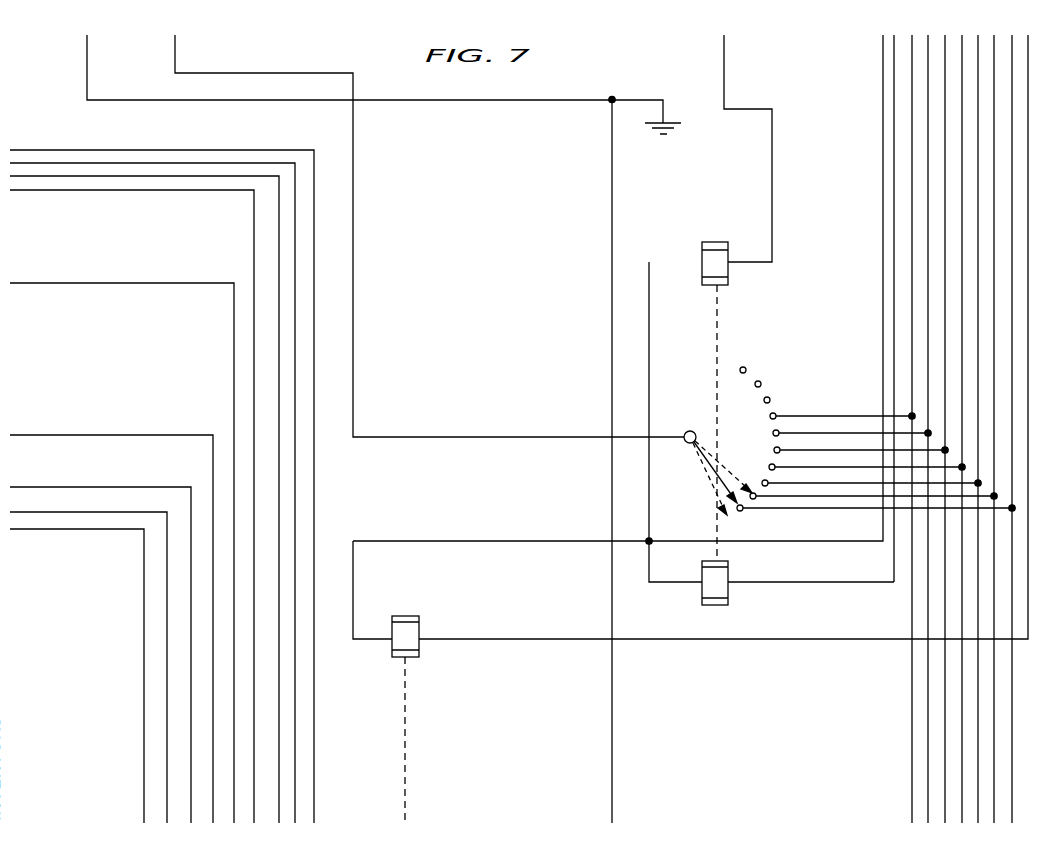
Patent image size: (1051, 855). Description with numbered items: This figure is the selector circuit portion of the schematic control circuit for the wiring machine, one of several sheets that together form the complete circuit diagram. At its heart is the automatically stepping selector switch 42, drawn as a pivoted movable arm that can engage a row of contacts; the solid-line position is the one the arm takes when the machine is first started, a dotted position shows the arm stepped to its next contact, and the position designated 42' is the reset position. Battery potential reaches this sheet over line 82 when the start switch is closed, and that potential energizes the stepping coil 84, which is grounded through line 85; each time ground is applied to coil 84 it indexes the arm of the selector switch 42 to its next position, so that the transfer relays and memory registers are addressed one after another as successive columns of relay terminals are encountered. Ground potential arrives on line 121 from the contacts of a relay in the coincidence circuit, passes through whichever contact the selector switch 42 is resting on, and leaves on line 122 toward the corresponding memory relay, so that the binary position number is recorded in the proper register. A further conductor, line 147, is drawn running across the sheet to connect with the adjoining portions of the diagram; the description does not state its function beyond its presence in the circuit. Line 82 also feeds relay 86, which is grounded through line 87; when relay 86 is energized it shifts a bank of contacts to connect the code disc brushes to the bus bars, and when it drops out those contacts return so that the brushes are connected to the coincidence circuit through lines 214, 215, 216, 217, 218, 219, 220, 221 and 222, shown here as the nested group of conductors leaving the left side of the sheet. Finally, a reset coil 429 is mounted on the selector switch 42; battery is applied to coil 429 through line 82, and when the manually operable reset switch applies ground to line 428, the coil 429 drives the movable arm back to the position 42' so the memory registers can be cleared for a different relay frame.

The selector switch 42 is at (843, 441).
The reset position of selector switch arm 42' is at (689, 514).
The line 82 is at (883, 44).
The stepping coil 84 is at (713, 252).
The line 85 is at (725, 60).
The relay 86 is at (410, 632).
The line 87 is at (1028, 178).
The line 121 is at (178, 60).
The line 122 is at (1011, 140).
The conductor 147 is at (87, 75).
The line 214 is at (84, 150).
The line 215 is at (106, 163).
The line 216 is at (60, 176).
The line 217 is at (118, 190).
The line 218 is at (104, 283).
The line 219 is at (43, 435).
The line 220 is at (88, 487).
The line 221 is at (78, 512).
The line 222 is at (108, 529).
The line 428 is at (894, 68).
The reset coil 429 is at (715, 592).